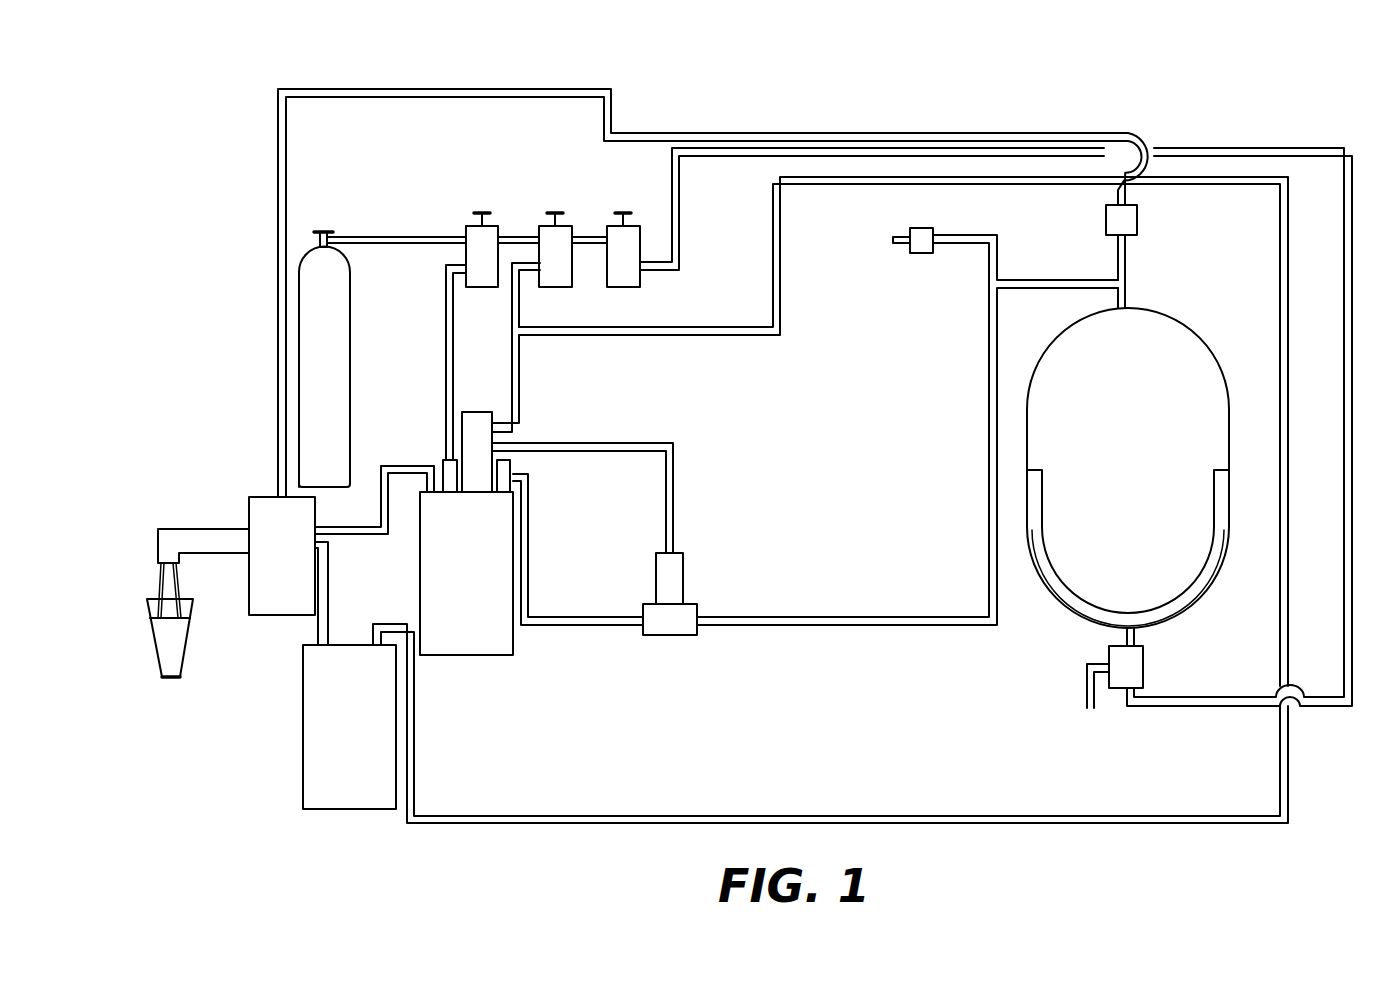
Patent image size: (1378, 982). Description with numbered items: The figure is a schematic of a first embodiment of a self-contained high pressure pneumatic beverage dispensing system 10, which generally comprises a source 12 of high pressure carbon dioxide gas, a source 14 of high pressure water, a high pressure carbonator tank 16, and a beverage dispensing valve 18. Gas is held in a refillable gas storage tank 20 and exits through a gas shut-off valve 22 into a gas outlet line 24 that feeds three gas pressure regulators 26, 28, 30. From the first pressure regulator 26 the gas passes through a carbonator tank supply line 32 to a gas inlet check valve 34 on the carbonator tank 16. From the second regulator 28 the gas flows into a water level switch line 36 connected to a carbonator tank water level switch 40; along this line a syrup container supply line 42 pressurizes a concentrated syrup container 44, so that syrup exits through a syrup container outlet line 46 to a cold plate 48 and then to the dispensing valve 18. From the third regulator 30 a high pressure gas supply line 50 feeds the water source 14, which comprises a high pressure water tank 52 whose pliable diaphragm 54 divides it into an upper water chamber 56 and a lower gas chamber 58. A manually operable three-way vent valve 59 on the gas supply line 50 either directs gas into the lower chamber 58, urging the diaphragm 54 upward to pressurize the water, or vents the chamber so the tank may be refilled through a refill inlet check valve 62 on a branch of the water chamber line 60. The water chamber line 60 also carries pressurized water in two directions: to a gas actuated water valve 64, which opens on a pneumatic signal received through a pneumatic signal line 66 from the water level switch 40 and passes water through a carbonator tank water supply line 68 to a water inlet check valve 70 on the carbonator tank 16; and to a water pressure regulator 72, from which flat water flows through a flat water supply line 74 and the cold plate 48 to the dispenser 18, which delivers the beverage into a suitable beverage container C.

The self-contained high pressure pneumatic beverage dispensing system 10 is at (1048, 96).
The source of gas 12 is at (362, 375).
The source of high pressure water 14 is at (1208, 299).
The high pressure carbonator tank 16 is at (467, 655).
The beverage dispensing valve 18 is at (197, 537).
The gas storage tank 20 is at (322, 280).
The gas shut-off valve 22 is at (322, 233).
The gas outlet line 24 is at (387, 235).
The first pressure regulator 26 is at (472, 240).
The second gas pressure regulator 28 is at (547, 240).
The third gas pressure regulator 30 is at (620, 240).
The carbonator tank supply line 32 is at (455, 378).
The gas inlet check valve 34 is at (448, 487).
The carbonator tank water level switch line 36 is at (519, 308).
The carbonator tank water level switch 40 is at (508, 437).
The syrup container supply line 42 is at (697, 336).
The concentrated syrup container 44 is at (347, 792).
The syrup container outlet line 46 is at (330, 582).
The cold plate 48 is at (276, 602).
The high pressure gas supply line 50 is at (1216, 146).
The high pressure water tank 52 is at (1037, 372).
The pliable diaphragm 54 is at (1170, 608).
The water chamber 56 is at (1142, 469).
The gas chamber 58 is at (1064, 600).
The three-way vent valve 59 is at (1122, 673).
The water chamber line 60 is at (1126, 258).
The refill inlet check valve 62 is at (922, 255).
The water valve 64 is at (672, 626).
The pneumatic signal line 66 is at (675, 478).
The carbonator tank water supply line 68 is at (567, 626).
The water inlet check valve 70 is at (510, 470).
The water pressure regulator 72 is at (1128, 218).
The flat water supply line 74 is at (863, 131).
The beverage container C is at (165, 648).